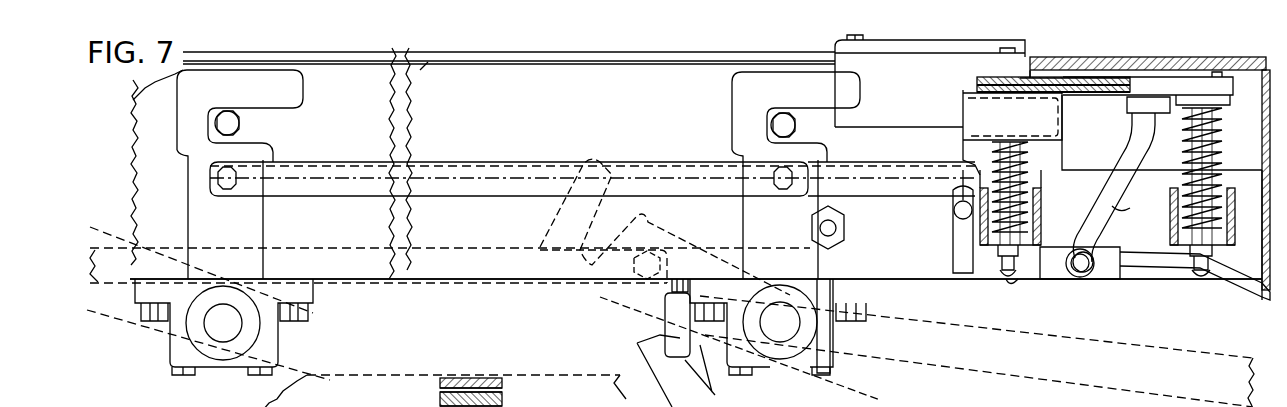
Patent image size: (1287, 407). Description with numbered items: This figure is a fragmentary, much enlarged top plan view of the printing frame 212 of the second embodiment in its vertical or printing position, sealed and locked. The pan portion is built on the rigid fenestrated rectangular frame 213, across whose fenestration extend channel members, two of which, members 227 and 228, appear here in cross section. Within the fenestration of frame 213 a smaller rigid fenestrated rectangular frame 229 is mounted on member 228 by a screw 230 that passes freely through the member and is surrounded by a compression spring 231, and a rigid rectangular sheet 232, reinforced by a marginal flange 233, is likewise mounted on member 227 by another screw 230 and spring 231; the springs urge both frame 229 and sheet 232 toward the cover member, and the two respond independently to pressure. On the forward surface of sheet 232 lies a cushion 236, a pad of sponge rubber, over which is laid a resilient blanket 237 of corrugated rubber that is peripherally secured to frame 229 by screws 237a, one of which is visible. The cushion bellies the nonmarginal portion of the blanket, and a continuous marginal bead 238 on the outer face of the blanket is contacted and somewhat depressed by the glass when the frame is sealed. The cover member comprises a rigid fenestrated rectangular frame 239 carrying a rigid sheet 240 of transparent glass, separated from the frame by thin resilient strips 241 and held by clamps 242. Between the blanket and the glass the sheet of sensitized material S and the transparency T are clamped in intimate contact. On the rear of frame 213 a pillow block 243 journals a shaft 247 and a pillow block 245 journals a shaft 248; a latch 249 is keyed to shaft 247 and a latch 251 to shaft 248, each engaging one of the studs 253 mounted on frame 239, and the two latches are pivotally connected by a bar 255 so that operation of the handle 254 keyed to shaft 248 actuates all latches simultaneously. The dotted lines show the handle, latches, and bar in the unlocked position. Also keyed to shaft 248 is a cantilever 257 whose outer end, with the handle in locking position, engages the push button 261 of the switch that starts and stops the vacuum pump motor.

The printing frame 212 is at (131, 183).
The rigid fenestrated rectangular frame 213 is at (143, 268).
The channel member 227 is at (1038, 248).
The channel member 228 is at (1222, 230).
The rigid fenestrated rectangular frame 229 is at (1108, 106).
The screws 230 is at (970, 284).
The compression spring 231 is at (1040, 196).
The rigid rectangular sheet 232 is at (985, 95).
The flanges 233 is at (1050, 137).
The cushion 236 is at (1053, 104).
The blanket 237 is at (510, 382).
The screws 237a is at (1203, 102).
The continuous marginal bead 238 is at (1138, 150).
The rigid fenestrated rectangular frame 239 is at (150, 88).
The rigid sheet of light-transmitting material 240 is at (274, 53).
The resilient strips 241 is at (350, 44).
The clamps 242 is at (899, 62).
The pillow block 243 is at (174, 347).
The pillow block 245 is at (825, 366).
The shaft 247 is at (221, 336).
The shaft 248 is at (790, 320).
The latch 249 is at (185, 112).
The latch 251 is at (735, 100).
The studs 253 is at (240, 121).
The handle 254 is at (1072, 392).
The bar 255 is at (536, 162).
The cantilever 257 is at (670, 312).
The push button of the switch 261 is at (702, 268).
The transparency T is at (1092, 58).
The sheet of sensitized material S is at (1124, 58).